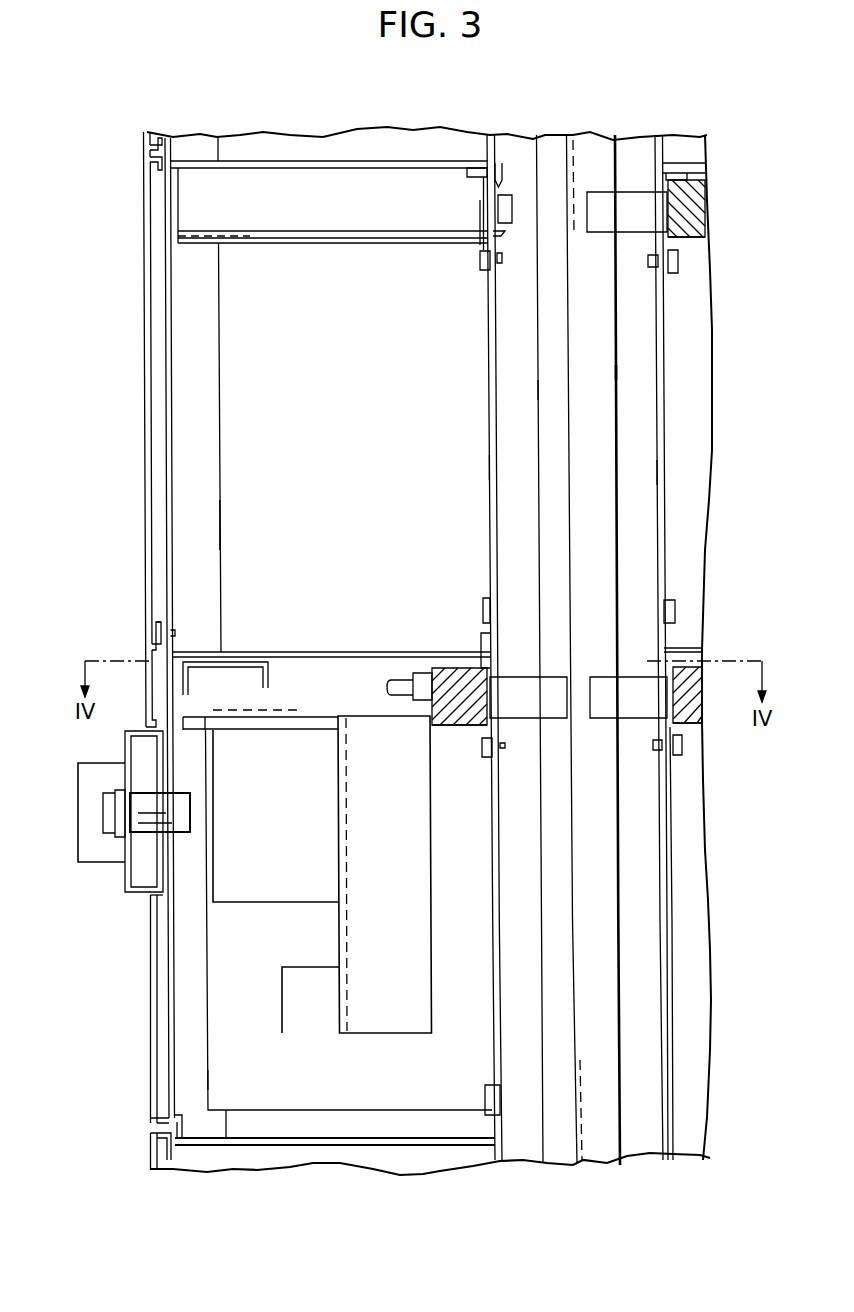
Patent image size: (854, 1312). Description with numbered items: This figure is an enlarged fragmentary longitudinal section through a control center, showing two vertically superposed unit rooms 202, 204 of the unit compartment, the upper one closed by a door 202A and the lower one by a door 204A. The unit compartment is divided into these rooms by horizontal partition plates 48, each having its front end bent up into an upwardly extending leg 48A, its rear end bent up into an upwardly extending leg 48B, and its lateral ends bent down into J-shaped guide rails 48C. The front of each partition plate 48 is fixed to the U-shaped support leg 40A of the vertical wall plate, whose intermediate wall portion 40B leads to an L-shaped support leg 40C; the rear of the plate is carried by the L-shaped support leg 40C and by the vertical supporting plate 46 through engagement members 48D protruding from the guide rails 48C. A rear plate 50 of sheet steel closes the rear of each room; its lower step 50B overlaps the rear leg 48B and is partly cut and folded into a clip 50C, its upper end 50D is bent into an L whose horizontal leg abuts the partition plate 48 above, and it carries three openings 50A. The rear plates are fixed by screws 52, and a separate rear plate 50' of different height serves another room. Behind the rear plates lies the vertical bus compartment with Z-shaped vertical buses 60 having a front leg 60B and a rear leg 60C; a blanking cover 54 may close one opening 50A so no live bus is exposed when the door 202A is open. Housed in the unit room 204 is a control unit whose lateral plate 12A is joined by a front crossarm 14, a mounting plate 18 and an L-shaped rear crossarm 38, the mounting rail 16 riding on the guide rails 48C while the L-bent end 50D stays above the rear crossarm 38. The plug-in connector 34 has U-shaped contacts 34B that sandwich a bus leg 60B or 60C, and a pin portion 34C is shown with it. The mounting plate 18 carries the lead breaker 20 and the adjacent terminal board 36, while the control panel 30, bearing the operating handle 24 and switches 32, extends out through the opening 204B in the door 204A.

The lateral plate 12A is at (207, 1079).
The front crossarm 14 is at (268, 683).
The mounting rail 16 is at (237, 710).
The mounting plate 18 is at (431, 874).
The lead breaker 20 is at (280, 902).
The operating handle 24 is at (78, 781).
The control panel 30 is at (127, 884).
The switch 32 is at (103, 829).
The plug-in type connector 34 is at (703, 238).
The U-shaped contact 34B is at (521, 678).
The bracket pin 34C is at (393, 686).
The terminal board 36 is at (282, 1007).
The rear crossarm 38 is at (665, 206).
The U-shaped support leg 40A is at (219, 526).
The intermediate wall portion 40B is at (262, 451).
The L-shaped support leg 40C is at (490, 468).
The vertical supporting plate 46 is at (657, 471).
The horizontal partition plate 48 is at (431, 160).
The upwardly extending leg 48A is at (162, 633).
The upwardly extending leg 48B is at (481, 641).
The J-shaped guide rail 48C is at (273, 231).
The engagement member 48D is at (499, 162).
The rear plate 50 is at (600, 647).
The rear plate 50' is at (718, 943).
The opening 50A is at (501, 237).
The step 50B is at (483, 607).
The clip 50C is at (497, 616).
The upper end 50D is at (468, 173).
The screw 52 is at (479, 268).
The blanking cover 54 is at (479, 210).
The vertical bus 60 is at (541, 341).
The front leg 60B is at (538, 392).
The rear leg 60C is at (616, 370).
The unit room 202 is at (355, 380).
The door 202A is at (145, 346).
The unit room 204 is at (379, 1078).
The door 204A is at (149, 992).
The opening 204B is at (153, 898).